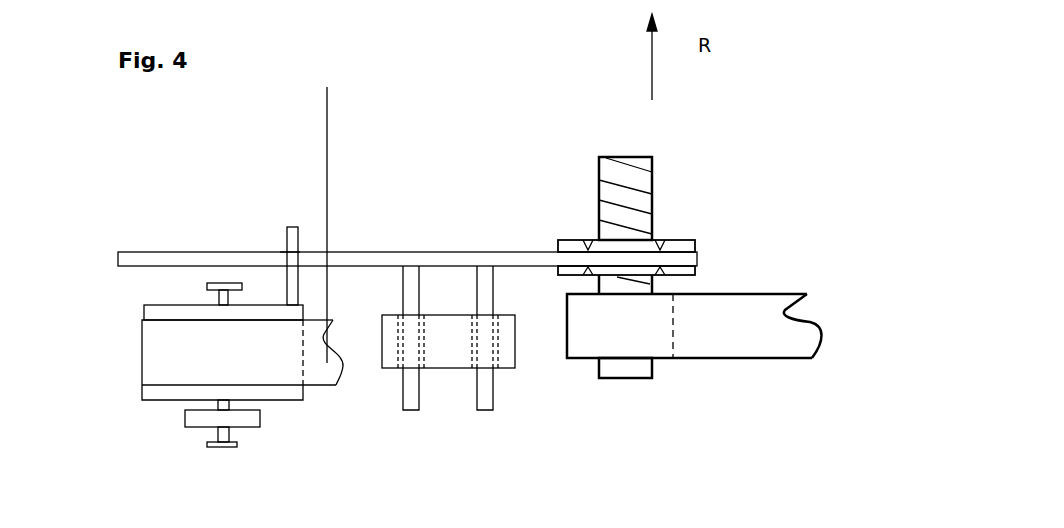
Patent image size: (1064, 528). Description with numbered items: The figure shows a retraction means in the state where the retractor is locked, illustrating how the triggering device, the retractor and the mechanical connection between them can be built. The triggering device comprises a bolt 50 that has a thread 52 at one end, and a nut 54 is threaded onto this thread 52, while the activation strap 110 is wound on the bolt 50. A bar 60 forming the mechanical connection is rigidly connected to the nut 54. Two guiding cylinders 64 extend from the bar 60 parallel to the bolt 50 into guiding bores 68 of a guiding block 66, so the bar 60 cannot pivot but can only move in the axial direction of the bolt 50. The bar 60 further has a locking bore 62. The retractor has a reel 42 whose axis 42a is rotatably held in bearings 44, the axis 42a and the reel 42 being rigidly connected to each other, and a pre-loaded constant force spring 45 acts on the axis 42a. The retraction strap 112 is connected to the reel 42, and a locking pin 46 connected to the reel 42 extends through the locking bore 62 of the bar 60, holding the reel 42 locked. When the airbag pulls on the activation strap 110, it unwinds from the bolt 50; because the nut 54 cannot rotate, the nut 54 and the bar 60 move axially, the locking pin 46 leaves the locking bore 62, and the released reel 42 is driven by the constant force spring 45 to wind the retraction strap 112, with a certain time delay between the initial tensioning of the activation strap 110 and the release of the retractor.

The reel 42 is at (163, 392).
The axis 42a is at (220, 430).
The bearings 44 is at (207, 287).
The constant force spring 45 is at (200, 419).
The locking pin 46 is at (292, 230).
The bolt 50 is at (633, 367).
The thread 52 is at (642, 193).
The nut 54 is at (680, 246).
The bar 60 is at (372, 260).
The locking bore 62 is at (285, 258).
The guiding cylinders 64 is at (488, 400).
The guiding block 66 is at (452, 337).
The guiding bores 68 is at (398, 347).
The activation strap 110 is at (732, 333).
The retraction strap 112 is at (330, 208).